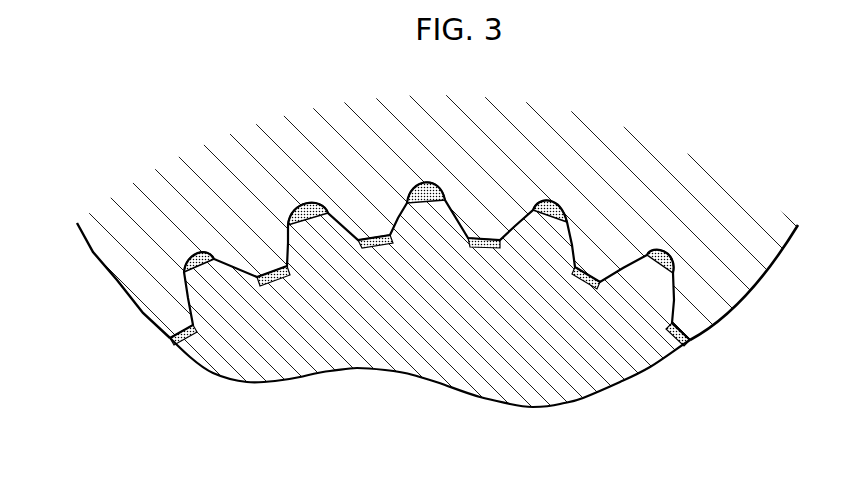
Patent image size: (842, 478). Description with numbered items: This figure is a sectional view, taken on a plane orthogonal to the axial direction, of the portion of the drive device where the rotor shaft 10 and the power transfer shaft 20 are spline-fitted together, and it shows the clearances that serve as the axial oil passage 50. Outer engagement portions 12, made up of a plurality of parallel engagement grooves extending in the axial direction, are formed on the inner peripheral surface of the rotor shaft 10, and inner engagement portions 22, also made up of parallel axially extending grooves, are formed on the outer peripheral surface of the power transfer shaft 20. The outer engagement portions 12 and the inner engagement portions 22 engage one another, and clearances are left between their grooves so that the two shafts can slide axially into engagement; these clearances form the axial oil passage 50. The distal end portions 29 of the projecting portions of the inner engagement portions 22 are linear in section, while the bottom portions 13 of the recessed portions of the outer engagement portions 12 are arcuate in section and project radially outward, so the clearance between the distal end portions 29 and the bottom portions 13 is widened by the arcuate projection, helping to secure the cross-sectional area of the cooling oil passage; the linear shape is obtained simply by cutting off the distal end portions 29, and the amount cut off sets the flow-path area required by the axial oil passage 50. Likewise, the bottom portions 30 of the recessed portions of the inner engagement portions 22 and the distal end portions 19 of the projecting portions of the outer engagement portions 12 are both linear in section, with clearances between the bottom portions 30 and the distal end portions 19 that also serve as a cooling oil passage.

The rotor shaft 10 is at (143, 287).
The outer engagement portions 12 is at (259, 212).
The bottom portions of recessed portions of the outer engagement portions 13 is at (390, 301).
The distal end portions of projecting portions of the outer engagement portions 19 is at (278, 272).
The power transfer shaft 20 is at (603, 370).
The inner engagement portions 22 is at (227, 304).
The distal end portions of projecting portions of the inner engagement portions 29 is at (305, 250).
The bottom portions of recessed portions of the inner engagement portions 30 is at (260, 272).
The axial oil passage 50 is at (186, 260).